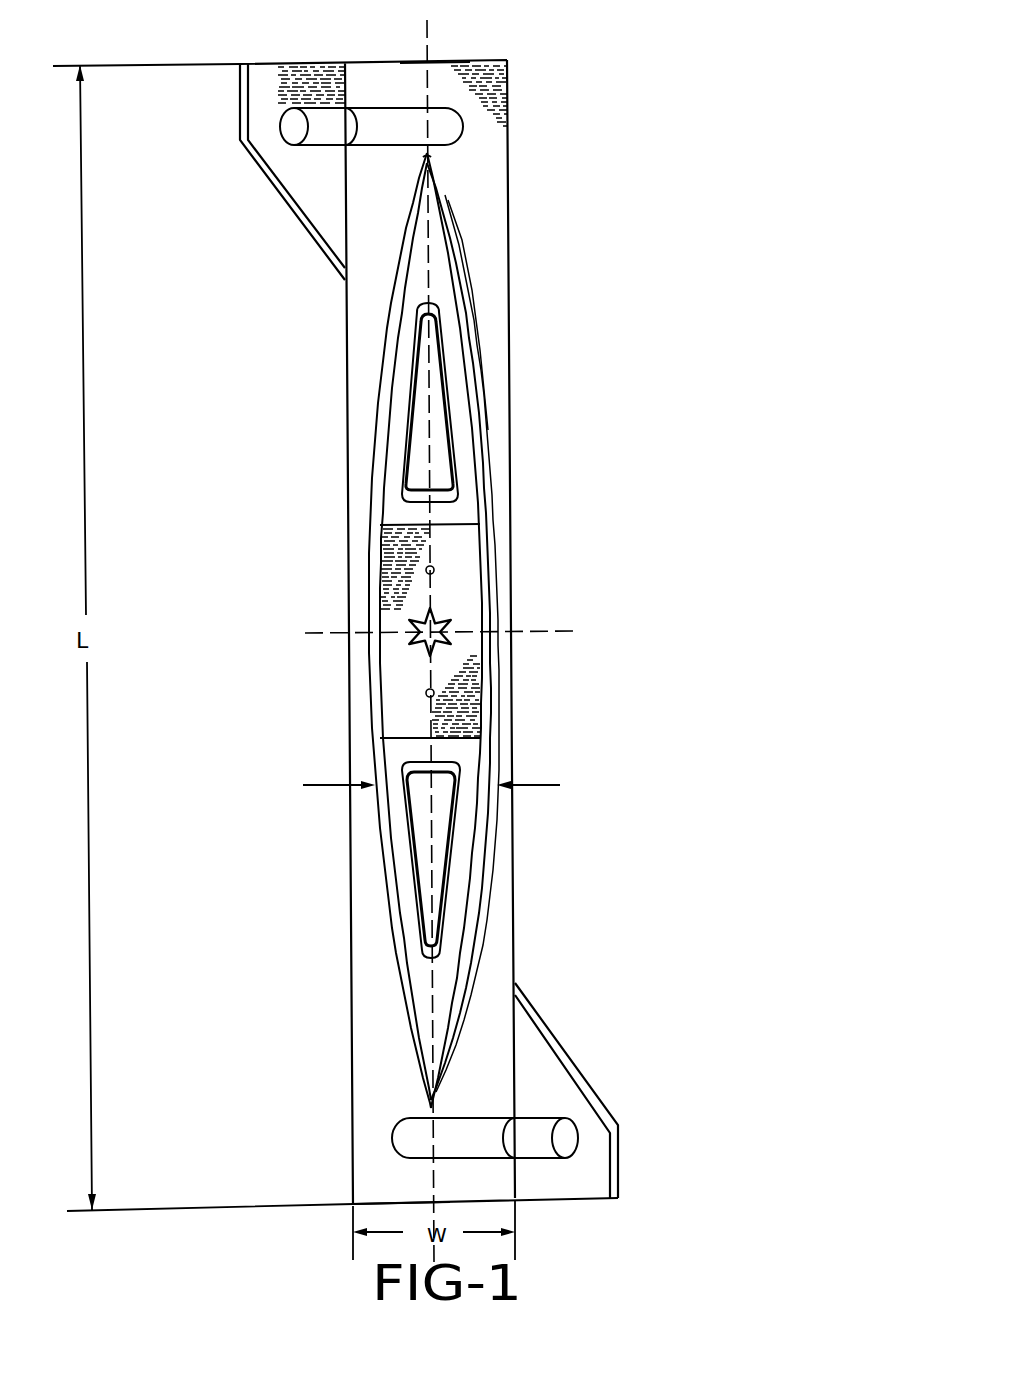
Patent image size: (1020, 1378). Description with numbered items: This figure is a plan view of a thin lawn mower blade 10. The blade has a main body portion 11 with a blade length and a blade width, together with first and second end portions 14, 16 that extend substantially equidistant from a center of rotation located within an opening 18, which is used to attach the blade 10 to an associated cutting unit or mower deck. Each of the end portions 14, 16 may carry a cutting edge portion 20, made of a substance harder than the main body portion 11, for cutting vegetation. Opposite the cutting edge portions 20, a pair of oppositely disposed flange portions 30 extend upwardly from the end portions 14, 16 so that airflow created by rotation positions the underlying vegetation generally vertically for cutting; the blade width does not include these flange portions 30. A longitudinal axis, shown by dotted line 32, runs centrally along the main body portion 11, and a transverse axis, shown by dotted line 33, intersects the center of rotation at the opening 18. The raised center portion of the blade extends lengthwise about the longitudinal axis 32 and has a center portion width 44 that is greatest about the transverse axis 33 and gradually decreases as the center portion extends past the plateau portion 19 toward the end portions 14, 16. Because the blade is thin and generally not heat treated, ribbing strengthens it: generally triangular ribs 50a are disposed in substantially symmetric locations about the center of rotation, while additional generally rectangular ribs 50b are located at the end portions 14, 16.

The thin lawn mower blade 10 is at (606, 199).
The main body portion 11 is at (495, 455).
The first end portion 14 is at (432, 58).
The second end portion 16 is at (353, 1203).
The opening 18 is at (441, 620).
The plateau portion 19 is at (392, 588).
The cutting edge portion 20 is at (507, 110).
The flange portion 30 is at (262, 118).
The longitudinal axis 32 is at (427, 52).
The transverse axis 33 is at (531, 635).
The center portion width 44 is at (448, 787).
The triangular ribs 50a is at (437, 460).
The rectangular ribs 50b is at (290, 135).